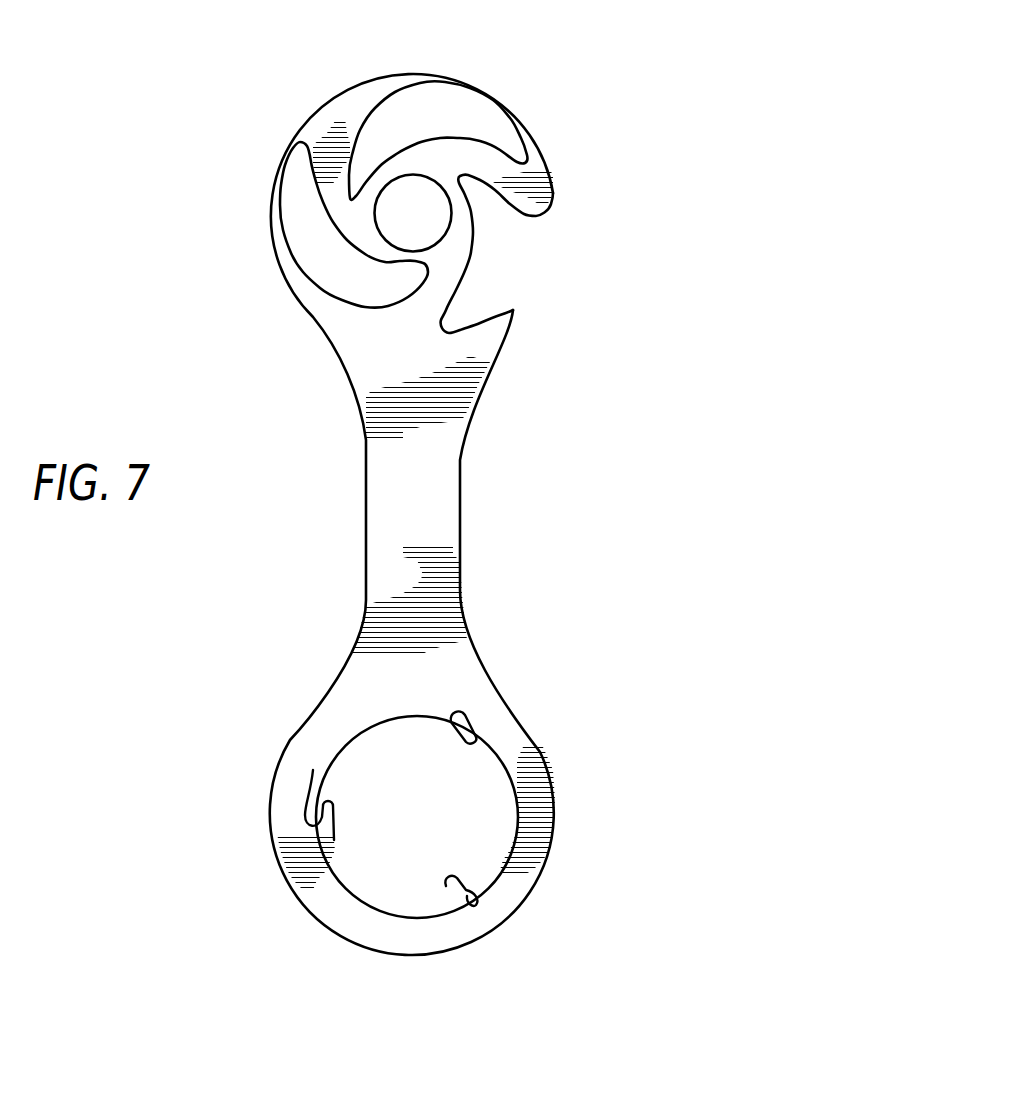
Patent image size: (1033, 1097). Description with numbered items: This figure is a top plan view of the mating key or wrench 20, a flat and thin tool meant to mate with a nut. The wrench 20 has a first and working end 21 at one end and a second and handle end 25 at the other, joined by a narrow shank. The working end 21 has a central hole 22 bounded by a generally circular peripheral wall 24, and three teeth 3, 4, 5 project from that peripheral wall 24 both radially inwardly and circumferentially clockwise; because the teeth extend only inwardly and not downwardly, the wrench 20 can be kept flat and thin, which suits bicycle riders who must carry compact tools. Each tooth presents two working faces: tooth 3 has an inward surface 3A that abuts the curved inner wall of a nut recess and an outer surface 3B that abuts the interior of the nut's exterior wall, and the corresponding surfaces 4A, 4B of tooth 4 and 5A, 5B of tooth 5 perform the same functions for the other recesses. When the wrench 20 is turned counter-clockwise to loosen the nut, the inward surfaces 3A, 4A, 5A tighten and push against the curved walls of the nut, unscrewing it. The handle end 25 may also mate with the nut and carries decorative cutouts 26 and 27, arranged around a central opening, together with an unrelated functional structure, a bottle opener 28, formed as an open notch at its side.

The mating wrench 20 is at (643, 496).
The working end 21 is at (550, 950).
The central hole 22 is at (363, 770).
The peripheral wall 24 is at (317, 905).
The handle end 25 is at (583, 183).
The decorative cutout 26 is at (420, 113).
The decorative cutout 27 is at (317, 244).
The bottle opener 28 is at (513, 310).
The tooth 3 is at (463, 713).
The inward surface 3A is at (456, 740).
The outer surface 3B is at (471, 737).
The tooth 4 is at (462, 890).
The inward surface 4A is at (453, 880).
The outer surface 4B is at (453, 887).
The tooth 5 is at (313, 775).
The inward surface 5A is at (334, 808).
The outer surface 5B is at (305, 815).